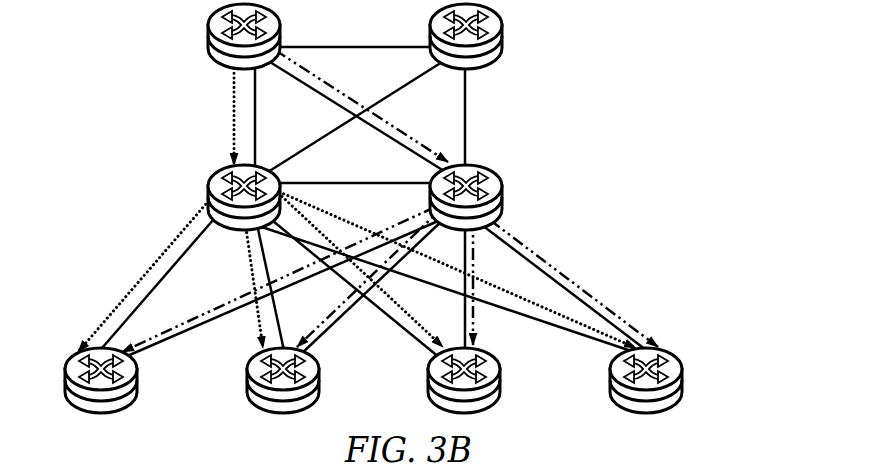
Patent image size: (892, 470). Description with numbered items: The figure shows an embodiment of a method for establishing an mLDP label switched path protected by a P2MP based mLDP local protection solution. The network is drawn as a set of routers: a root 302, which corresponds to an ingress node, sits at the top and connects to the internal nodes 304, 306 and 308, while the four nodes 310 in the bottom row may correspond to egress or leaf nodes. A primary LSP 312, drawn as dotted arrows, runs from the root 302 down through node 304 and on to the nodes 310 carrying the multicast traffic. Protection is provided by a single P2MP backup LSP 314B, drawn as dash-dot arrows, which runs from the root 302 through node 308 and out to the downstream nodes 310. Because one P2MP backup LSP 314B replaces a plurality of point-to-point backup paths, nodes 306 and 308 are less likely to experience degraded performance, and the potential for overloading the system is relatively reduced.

The root 302 is at (207, 36).
The node 304 is at (210, 168).
The node 306 is at (503, 37).
The node 308 is at (503, 192).
The nodes 310 is at (138, 378).
The primary LSP 312 is at (233, 116).
The backup LSP 314B is at (383, 122).